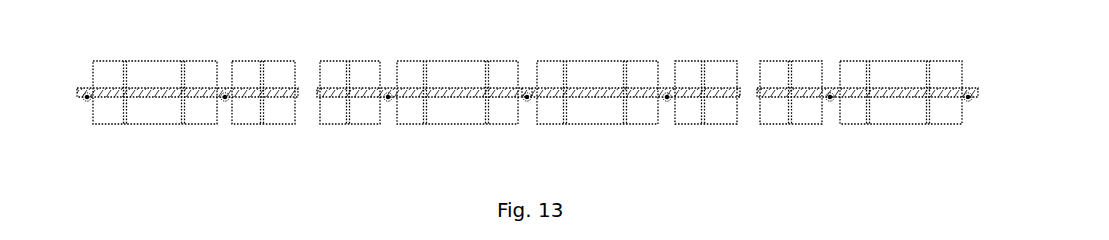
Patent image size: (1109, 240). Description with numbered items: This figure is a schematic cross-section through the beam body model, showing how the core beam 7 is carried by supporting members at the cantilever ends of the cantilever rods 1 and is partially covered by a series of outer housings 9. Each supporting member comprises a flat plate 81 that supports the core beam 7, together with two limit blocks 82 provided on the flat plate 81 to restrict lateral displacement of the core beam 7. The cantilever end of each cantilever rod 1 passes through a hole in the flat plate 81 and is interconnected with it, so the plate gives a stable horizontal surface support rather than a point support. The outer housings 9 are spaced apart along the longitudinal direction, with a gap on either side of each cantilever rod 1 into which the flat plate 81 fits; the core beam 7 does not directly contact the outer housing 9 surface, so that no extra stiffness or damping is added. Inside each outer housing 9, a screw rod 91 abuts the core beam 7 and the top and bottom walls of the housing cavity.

The cantilever rod 1 is at (526, 101).
The core beam 7 is at (588, 88).
The outer housing 9 is at (153, 61).
The screw rod 91 is at (422, 70).
The flat plate 81 is at (85, 101).
The limit block 82 is at (527, 93).